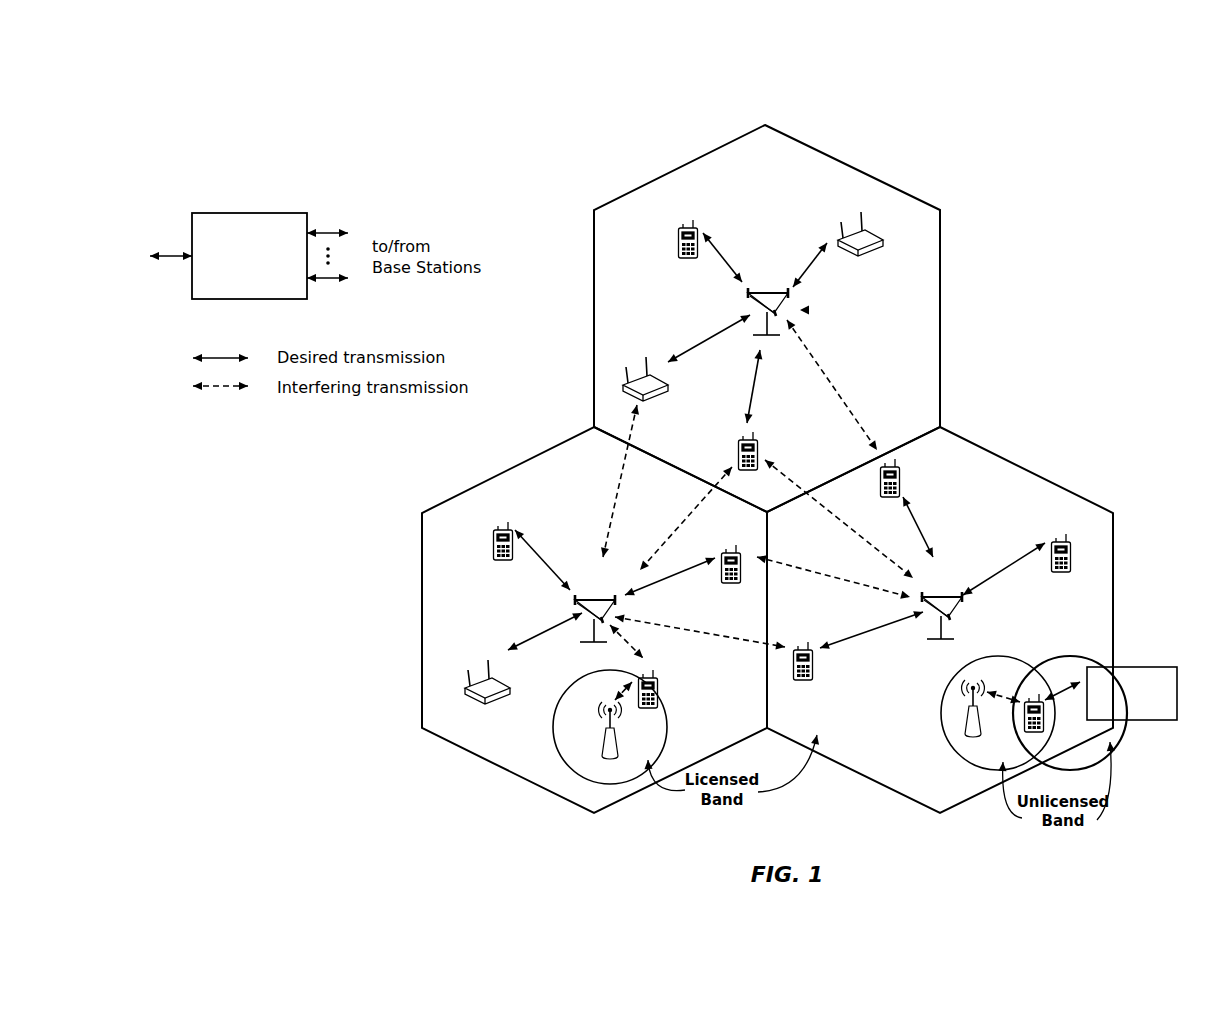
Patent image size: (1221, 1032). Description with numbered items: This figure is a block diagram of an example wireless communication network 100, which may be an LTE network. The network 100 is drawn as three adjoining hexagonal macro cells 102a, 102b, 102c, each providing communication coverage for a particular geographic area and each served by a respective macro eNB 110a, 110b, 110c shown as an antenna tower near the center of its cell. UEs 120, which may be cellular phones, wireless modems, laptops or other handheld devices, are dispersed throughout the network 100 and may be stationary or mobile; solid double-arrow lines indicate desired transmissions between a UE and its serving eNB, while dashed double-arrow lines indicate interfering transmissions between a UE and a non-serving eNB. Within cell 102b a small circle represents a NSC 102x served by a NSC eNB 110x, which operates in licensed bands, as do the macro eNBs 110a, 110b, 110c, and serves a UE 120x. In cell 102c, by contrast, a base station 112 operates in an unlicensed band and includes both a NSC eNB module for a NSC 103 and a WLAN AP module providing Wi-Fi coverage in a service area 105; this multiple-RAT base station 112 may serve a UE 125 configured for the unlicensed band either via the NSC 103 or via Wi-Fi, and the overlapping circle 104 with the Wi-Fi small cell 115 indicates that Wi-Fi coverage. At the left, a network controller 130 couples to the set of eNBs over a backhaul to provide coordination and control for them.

The wireless communication network 100 is at (1058, 190).
The macro cell 102a is at (853, 168).
The macro cell 102b is at (510, 471).
The macro cell 102c is at (1026, 471).
The NSC 102x is at (570, 687).
The NSC 103 is at (967, 713).
The Wi-Fi small cell coverage area 104 is at (1070, 657).
The service area 105 is at (949, 684).
The eNB 110a is at (764, 293).
The eNB 110b is at (590, 599).
The eNB 110c is at (938, 597).
The NSC eNB 110x is at (619, 750).
The base station 112 is at (982, 727).
The Wi-Fi small cell 115 is at (1177, 720).
The UE 120 is at (678, 232).
The UE 120x is at (657, 684).
The UE 125 is at (1024, 730).
The network controller 130 is at (246, 213).